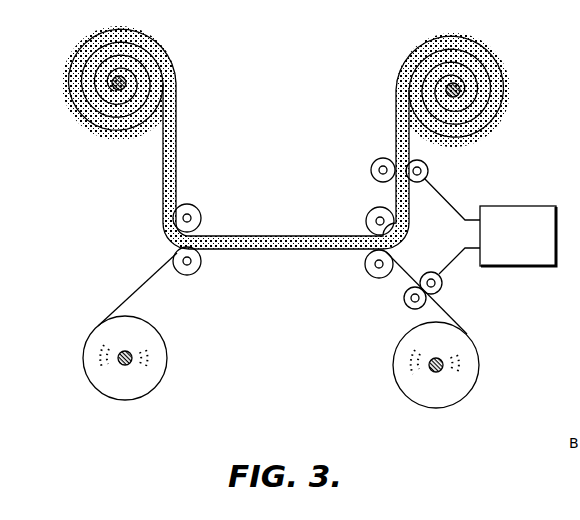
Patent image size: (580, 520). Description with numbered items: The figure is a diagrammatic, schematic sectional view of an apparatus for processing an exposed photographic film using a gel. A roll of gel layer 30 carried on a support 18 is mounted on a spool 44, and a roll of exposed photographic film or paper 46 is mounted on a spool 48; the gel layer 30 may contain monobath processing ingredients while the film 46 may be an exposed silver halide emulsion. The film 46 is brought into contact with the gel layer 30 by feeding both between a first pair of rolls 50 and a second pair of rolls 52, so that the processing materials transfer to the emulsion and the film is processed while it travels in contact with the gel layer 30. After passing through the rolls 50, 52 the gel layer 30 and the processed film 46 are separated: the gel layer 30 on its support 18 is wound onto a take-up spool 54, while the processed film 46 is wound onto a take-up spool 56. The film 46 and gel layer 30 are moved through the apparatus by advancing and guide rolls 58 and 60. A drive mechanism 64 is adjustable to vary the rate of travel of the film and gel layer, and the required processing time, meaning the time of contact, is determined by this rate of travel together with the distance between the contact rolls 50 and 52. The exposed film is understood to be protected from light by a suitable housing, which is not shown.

The support 18 is at (276, 236).
The gel layer 30 is at (161, 173).
The spool 44 is at (111, 80).
The exposed photographic film 46 is at (129, 298).
The spool 48 is at (119, 366).
The pair of rolls 50 is at (201, 256).
The pair of rolls 52 is at (366, 255).
The take-up spool 54 is at (468, 97).
The take-up spool 56 is at (430, 370).
The advancing and guide rolls 58 is at (428, 296).
The advancing and guide rolls 60 is at (406, 181).
The drive mechanism 64 is at (534, 245).